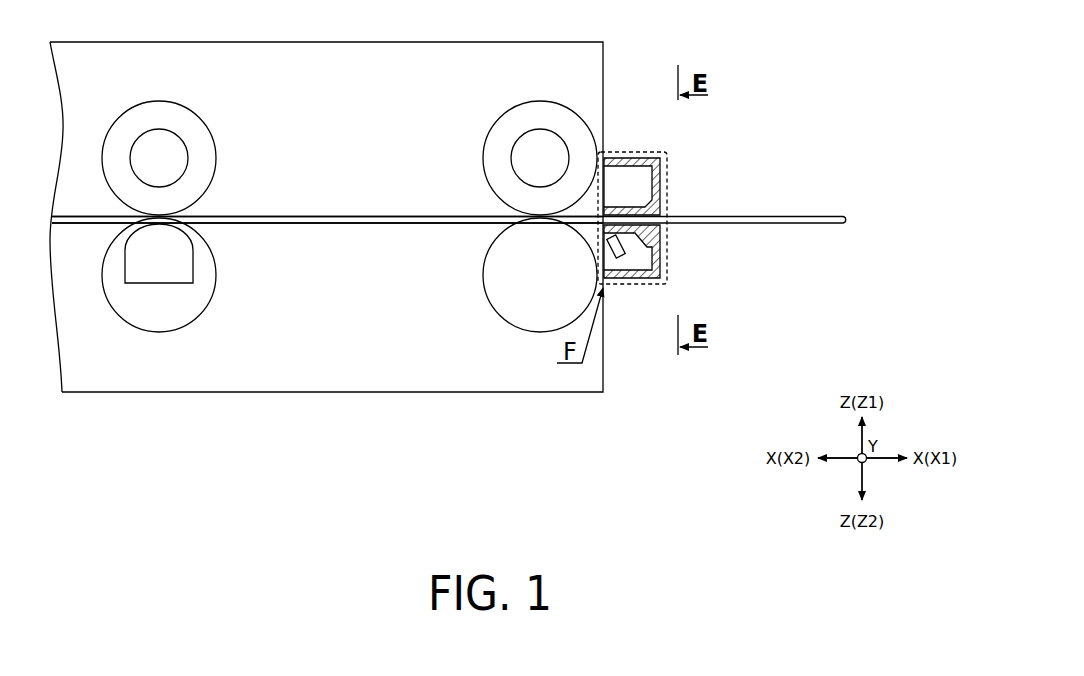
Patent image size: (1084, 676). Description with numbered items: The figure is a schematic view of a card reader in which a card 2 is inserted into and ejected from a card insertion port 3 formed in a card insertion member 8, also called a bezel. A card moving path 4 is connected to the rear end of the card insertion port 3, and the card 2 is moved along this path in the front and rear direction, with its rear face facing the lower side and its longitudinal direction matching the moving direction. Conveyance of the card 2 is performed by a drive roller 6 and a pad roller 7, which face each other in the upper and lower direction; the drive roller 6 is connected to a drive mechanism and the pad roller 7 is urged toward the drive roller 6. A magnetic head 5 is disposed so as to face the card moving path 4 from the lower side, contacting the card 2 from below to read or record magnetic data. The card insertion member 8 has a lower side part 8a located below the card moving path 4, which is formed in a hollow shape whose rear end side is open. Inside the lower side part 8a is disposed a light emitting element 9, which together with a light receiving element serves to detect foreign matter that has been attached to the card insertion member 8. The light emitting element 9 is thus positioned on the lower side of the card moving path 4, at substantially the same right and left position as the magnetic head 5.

The card 2 is at (813, 216).
The card insertion port 3 is at (667, 210).
The card moving path 4 is at (343, 216).
The magnetic head 5 is at (193, 266).
The drive roller 6 is at (158, 332).
The pad roller 7 is at (158, 101).
The card insertion member 8 is at (637, 158).
The lower side part 8a is at (660, 253).
The light emitting element 9 is at (616, 257).